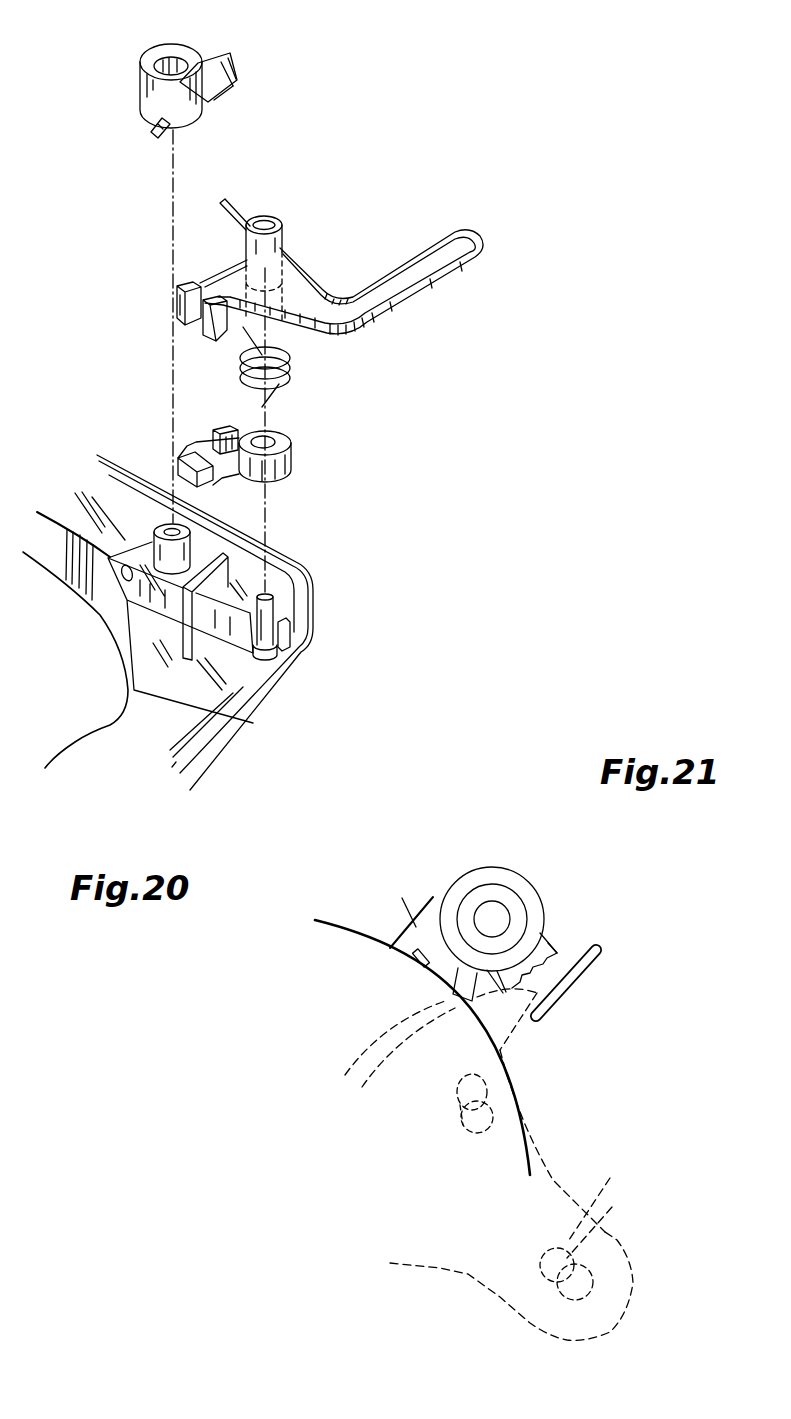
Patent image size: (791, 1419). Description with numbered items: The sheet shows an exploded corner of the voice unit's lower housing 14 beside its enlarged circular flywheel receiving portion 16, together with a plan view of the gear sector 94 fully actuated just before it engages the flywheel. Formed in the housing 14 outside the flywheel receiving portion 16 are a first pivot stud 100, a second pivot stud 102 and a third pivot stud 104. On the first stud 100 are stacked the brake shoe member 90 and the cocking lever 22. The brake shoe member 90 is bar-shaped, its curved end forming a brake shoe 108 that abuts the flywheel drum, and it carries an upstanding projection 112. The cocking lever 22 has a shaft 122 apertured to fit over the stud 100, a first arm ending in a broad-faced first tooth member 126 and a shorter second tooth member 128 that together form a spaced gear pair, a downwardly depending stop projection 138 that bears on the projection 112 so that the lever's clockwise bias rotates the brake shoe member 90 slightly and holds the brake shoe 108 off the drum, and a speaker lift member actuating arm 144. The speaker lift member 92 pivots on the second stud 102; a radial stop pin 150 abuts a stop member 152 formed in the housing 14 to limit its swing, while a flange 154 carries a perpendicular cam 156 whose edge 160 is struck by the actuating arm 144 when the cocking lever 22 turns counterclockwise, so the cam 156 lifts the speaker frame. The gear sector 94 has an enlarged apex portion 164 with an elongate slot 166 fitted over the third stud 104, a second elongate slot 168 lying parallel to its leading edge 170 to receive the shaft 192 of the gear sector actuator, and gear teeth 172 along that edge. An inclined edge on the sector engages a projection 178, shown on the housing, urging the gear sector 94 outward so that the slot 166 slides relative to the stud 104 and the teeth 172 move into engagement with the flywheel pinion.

In FIG. 20, the lower housing 14 is at (253, 756).
In FIG. 20, the flywheel receiving portion 16 is at (75, 643).
In FIG. 20, the cocking lever 22 is at (328, 268).
In FIG. 20, the brake shoe member 90 is at (298, 462).
In FIG. 20, the speaker lift member 92 is at (123, 101).
In FIG. 21, the speaker lift member 92 is at (552, 884).
In FIG. 21, the gear sector 94 is at (540, 1131).
In FIG. 20, the first pivot stud 100 is at (307, 608).
In FIG. 20, the second pivot stud 102 is at (195, 543).
In FIG. 21, the third pivot stud 104 is at (588, 1270).
In FIG. 20, the brake shoe 108 is at (178, 470).
In FIG. 20, the projection 112 is at (223, 428).
In FIG. 20, the shaft 122 is at (246, 244).
In FIG. 20, the first tooth member 126 is at (177, 303).
In FIG. 20, the second tooth member 128 is at (197, 338).
In FIG. 20, the stop projection 138 is at (228, 339).
In FIG. 20, the speaker lift member actuating arm 144 is at (238, 208).
In FIG. 20, the stop pin 150 is at (155, 136).
In FIG. 21, the stop pin 150 is at (410, 907).
In FIG. 20, the stop member 152 is at (123, 572).
In FIG. 21, the stop member 152 is at (412, 962).
In FIG. 20, the flange 154 is at (210, 63).
In FIG. 21, the flange 154 is at (548, 943).
In FIG. 20, the cam 156 is at (236, 70).
In FIG. 20, the edge 160 is at (238, 60).
In FIG. 21, the apex portion 164 is at (616, 1202).
In FIG. 21, the elongate slot 166 is at (616, 1227).
In FIG. 21, the second elongate slot 168 is at (453, 1090).
In FIG. 21, the leading edge 170 is at (520, 1078).
In FIG. 21, the gear teeth 172 is at (434, 1008).
In FIG. 20, the projection 178 is at (178, 630).
In FIG. 21, the projection 178 is at (590, 950).
In FIG. 21, the shaft 192 is at (473, 1137).